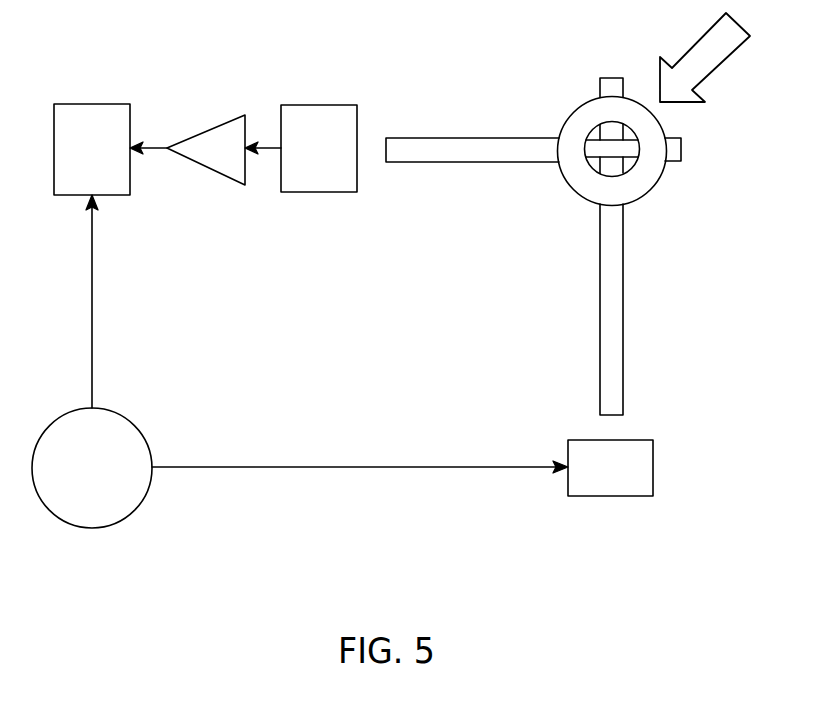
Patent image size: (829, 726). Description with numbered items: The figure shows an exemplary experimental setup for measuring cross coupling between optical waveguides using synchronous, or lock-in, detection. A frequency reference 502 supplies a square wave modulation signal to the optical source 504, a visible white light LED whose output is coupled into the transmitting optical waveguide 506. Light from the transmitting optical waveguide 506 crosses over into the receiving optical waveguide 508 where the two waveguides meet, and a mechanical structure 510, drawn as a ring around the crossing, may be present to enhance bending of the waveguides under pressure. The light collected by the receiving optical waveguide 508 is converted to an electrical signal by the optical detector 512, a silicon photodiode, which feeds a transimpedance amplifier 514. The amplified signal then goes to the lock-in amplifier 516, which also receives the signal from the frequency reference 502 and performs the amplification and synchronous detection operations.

The frequency reference 502 is at (117, 485).
The optical source 504 is at (633, 483).
The transmitting optical waveguide 506 is at (610, 353).
The receiving optical waveguide 508 is at (461, 152).
The mechanical structure for enhancing waveguide bending under pressure 510 is at (642, 185).
The optical detector 512 is at (345, 161).
The transimpedance amplifier 514 is at (210, 142).
The lock-in amplifier 516 is at (113, 161).